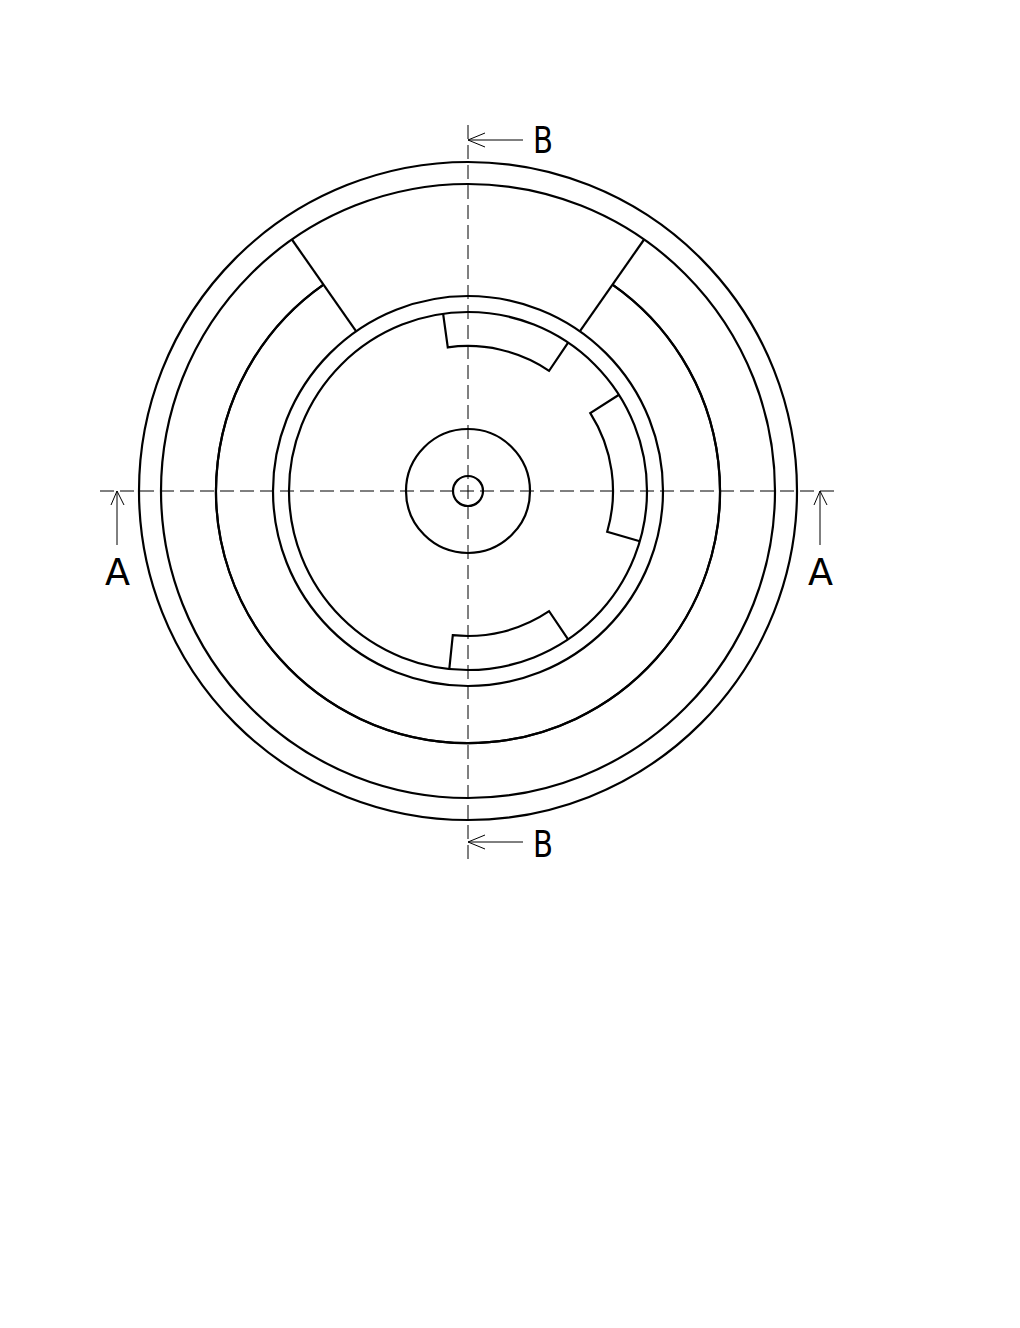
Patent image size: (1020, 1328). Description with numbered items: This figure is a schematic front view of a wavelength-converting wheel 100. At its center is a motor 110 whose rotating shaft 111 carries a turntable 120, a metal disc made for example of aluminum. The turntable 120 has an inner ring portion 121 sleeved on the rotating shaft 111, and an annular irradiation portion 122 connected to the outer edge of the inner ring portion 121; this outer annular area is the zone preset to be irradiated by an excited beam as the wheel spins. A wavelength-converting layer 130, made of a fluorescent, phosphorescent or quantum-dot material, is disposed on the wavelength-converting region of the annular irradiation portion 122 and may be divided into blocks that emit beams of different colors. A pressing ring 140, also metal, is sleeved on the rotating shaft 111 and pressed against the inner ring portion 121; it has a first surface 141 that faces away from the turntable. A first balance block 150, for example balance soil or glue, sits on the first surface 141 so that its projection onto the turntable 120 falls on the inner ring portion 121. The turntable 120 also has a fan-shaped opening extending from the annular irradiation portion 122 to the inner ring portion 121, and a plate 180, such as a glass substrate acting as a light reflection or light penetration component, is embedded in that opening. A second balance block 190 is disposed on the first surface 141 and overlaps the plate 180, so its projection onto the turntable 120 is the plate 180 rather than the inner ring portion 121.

The wavelength-converting wheel 100 is at (141, 90).
The motor 110 is at (654, 379).
The rotating shaft 111 is at (500, 462).
The turntable 120 is at (430, 175).
The inner ring portion 121 is at (245, 605).
The annular irradiation portion 122 is at (173, 407).
The wavelength-converting layer 130 is at (282, 698).
The pressing ring 140 is at (449, 379).
The first surface 141 is at (393, 383).
The first balance block 150 is at (627, 450).
The plate 180 is at (555, 225).
The second balance block 190 is at (532, 342).